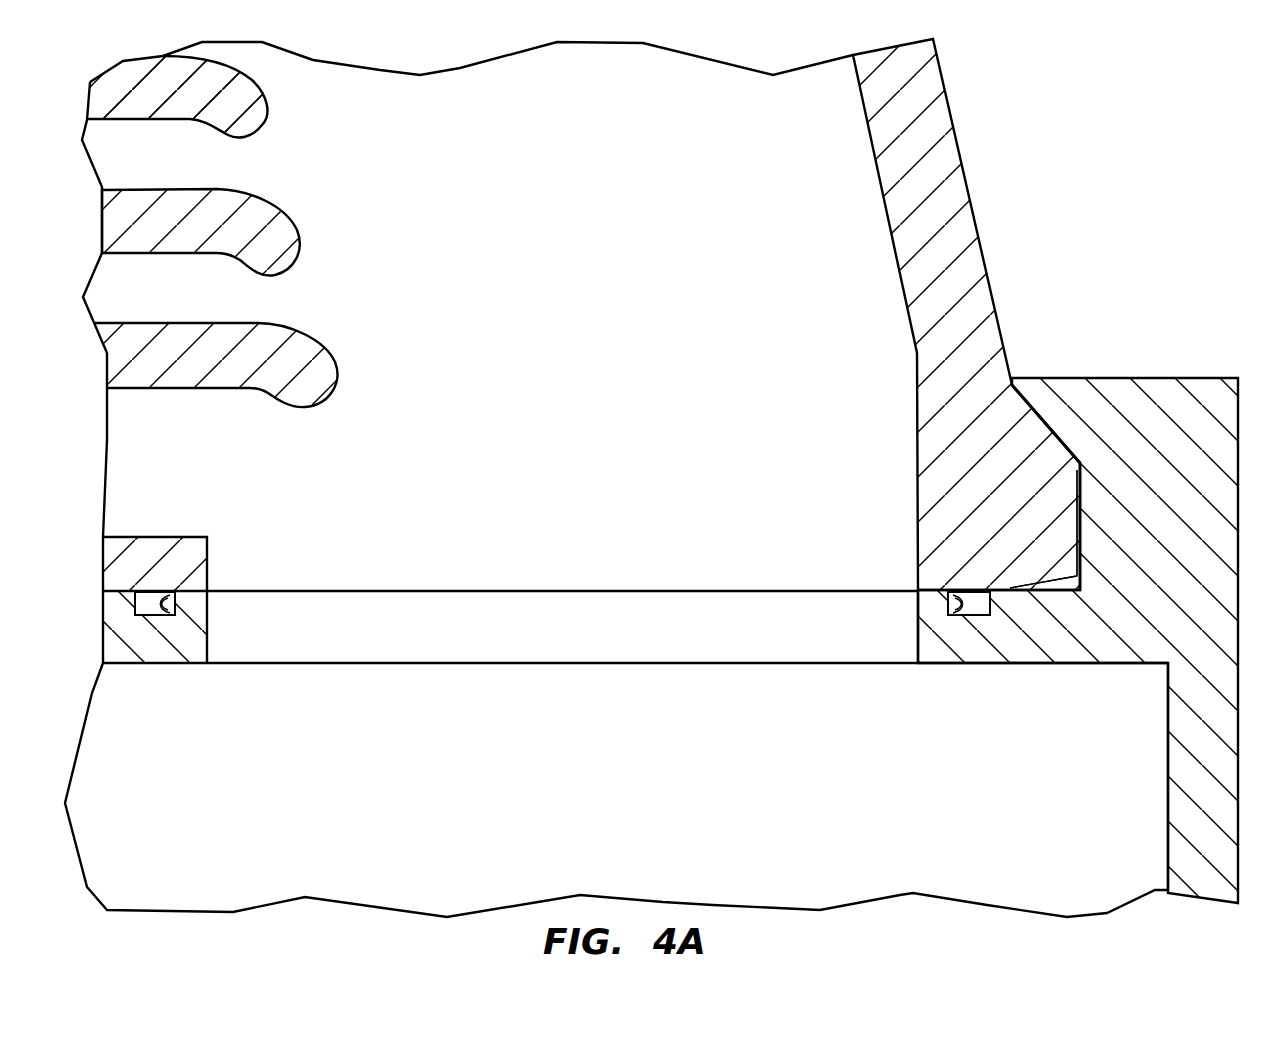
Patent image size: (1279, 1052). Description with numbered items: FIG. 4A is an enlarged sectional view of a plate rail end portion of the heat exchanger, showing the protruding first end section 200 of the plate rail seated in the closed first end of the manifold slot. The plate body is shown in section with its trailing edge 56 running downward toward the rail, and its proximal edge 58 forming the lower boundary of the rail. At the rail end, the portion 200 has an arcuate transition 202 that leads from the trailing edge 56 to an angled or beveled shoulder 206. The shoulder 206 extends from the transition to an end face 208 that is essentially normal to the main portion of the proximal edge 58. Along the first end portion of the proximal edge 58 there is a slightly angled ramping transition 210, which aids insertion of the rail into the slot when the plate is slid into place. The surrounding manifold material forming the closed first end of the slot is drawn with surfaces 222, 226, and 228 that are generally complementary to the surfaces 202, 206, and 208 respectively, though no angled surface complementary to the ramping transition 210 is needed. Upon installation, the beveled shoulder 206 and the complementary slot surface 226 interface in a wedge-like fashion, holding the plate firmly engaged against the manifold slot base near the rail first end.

The trailing edge 56 is at (993, 316).
The proximal edge 58 is at (932, 594).
The protruding first end section 200 is at (1033, 496).
The arcuate transition 202 is at (1023, 380).
The angled or beveled shoulder 206 is at (1056, 431).
The end face 208 is at (1082, 517).
The ramping transition 210 is at (1050, 594).
The slot end surface complementary to arcuate transition 222 is at (1012, 386).
The slot end surface complementary to shoulder 226 is at (1040, 437).
The slot end surface complementary to end face 228 is at (1078, 552).